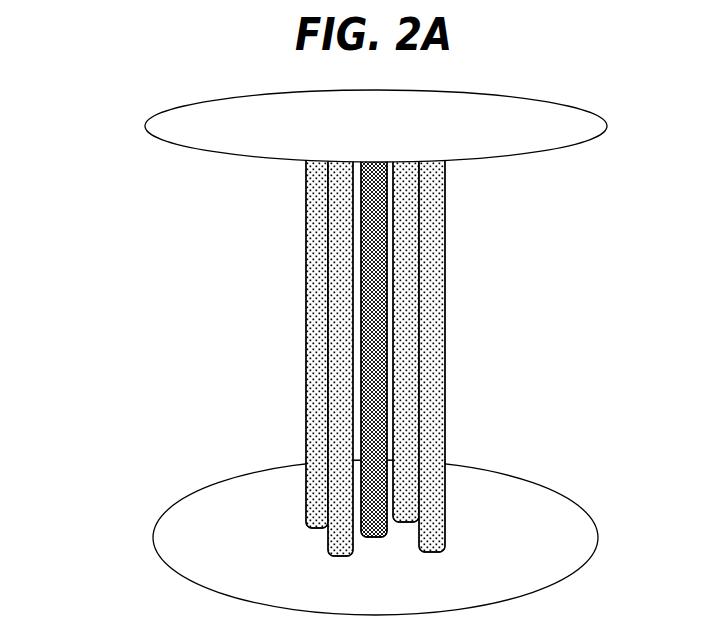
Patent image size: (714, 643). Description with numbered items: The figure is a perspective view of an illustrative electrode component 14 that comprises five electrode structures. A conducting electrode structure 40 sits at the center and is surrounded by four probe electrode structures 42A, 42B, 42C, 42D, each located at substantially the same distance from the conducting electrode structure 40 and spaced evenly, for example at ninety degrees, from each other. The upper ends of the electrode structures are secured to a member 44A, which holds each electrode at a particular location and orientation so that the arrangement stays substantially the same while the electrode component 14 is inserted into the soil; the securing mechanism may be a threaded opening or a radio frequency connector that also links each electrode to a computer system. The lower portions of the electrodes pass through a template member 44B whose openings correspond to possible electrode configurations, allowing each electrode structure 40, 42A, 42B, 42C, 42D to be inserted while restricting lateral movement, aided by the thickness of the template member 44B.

The electrode component 14 is at (117, 102).
The conducting electrode structure 40 is at (375, 538).
The probe electrode structure 42A is at (313, 265).
The probe electrode structure 42B is at (410, 339).
The probe electrode structure 42C is at (438, 259).
The probe electrode structure 42D is at (335, 339).
The member 44A is at (395, 136).
The template member 44B is at (260, 558).